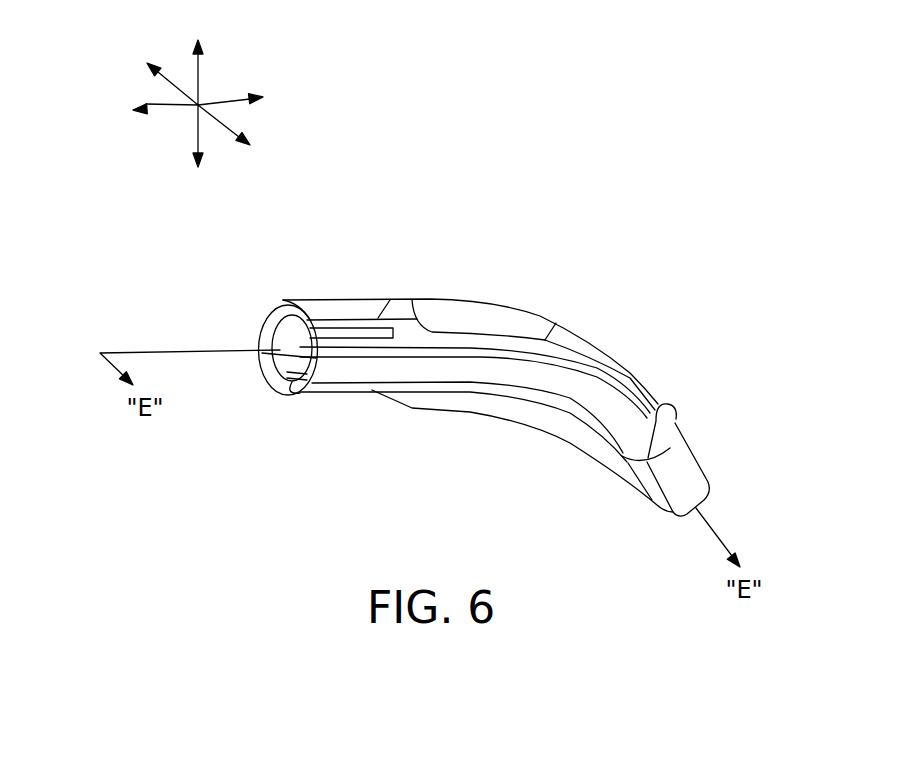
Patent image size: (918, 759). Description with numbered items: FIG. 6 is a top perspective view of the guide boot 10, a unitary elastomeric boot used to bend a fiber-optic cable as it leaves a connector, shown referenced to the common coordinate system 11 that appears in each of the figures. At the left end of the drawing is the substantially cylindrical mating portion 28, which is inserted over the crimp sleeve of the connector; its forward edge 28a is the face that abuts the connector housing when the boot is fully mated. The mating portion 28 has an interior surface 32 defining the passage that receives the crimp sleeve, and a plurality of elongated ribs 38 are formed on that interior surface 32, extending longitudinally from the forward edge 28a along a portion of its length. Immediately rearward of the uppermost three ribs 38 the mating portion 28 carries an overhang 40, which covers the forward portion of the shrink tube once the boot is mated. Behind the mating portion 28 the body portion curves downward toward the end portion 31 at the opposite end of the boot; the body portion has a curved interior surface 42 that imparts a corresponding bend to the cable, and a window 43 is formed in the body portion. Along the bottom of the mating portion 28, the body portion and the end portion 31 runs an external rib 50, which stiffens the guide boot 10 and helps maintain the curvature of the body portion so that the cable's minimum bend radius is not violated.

The guide boot 10 is at (625, 306).
The coordinate system 11 is at (228, 82).
The mating portion 28 is at (320, 285).
The forward edge 28a is at (258, 325).
The end portion 31 is at (704, 424).
The interior surface 32 is at (290, 327).
The ribs 38 is at (283, 377).
The overhang 40 is at (387, 297).
The interior surface 42 is at (452, 332).
The window 43 is at (500, 310).
The external rib 50 is at (491, 430).